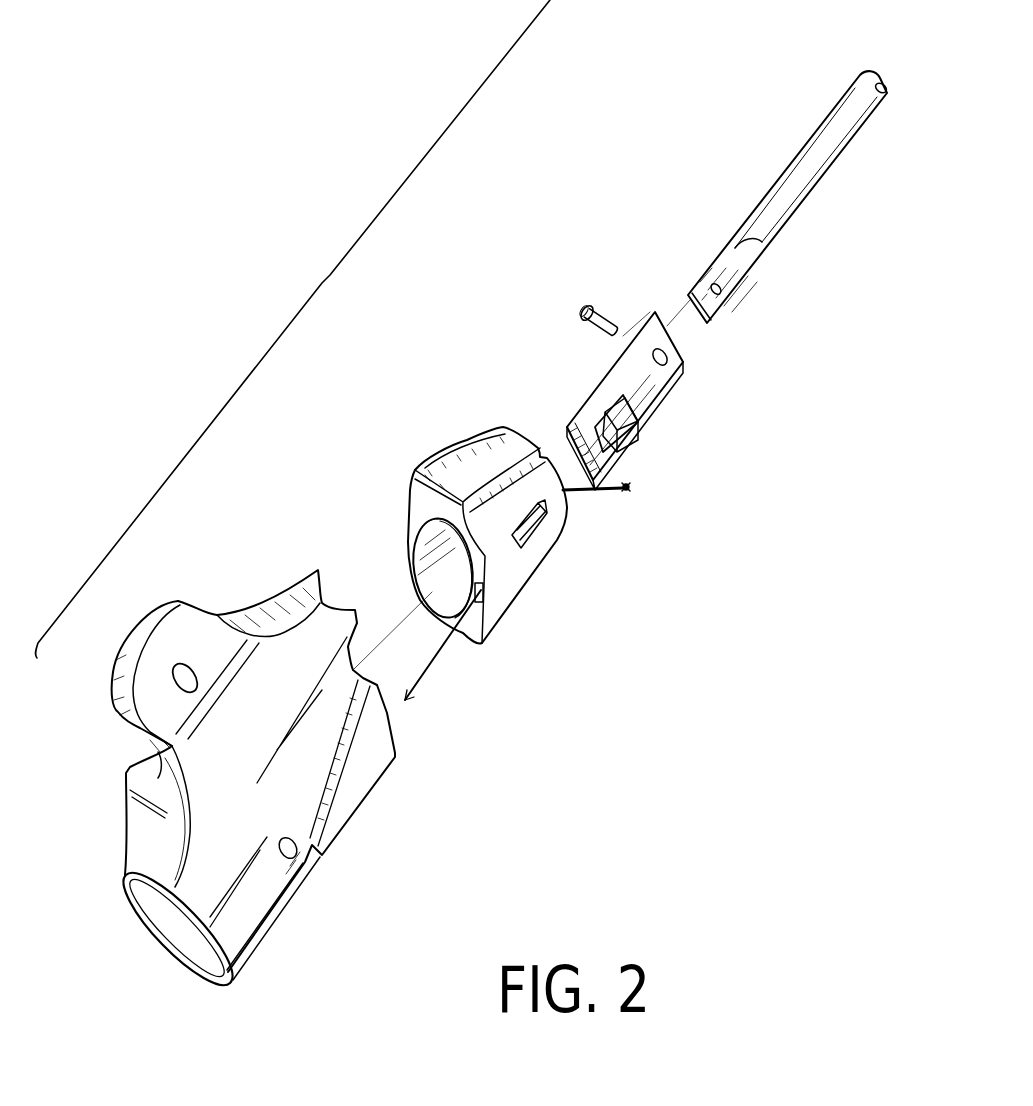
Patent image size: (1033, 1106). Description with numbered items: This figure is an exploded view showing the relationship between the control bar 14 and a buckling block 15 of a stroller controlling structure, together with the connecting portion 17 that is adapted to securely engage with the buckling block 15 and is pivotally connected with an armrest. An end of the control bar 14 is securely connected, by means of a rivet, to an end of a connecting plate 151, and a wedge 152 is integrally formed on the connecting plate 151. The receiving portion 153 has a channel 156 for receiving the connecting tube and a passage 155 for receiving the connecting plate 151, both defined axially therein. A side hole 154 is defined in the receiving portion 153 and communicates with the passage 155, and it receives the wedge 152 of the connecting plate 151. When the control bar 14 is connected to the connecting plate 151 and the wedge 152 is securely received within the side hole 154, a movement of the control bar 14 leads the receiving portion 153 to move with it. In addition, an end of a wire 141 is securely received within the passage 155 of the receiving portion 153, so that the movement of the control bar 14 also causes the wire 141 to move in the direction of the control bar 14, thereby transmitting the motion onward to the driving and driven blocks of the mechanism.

The control bar 14 is at (820, 170).
The buckling block 15 is at (501, 257).
The connecting portion 17 is at (290, 872).
The wire 141 is at (437, 667).
The connecting plate 151 is at (632, 397).
The wedge 152 is at (638, 423).
The receiving portion 153 is at (492, 555).
The side hole 154 is at (543, 537).
The passage 155 is at (570, 500).
The channel 156 is at (415, 538).